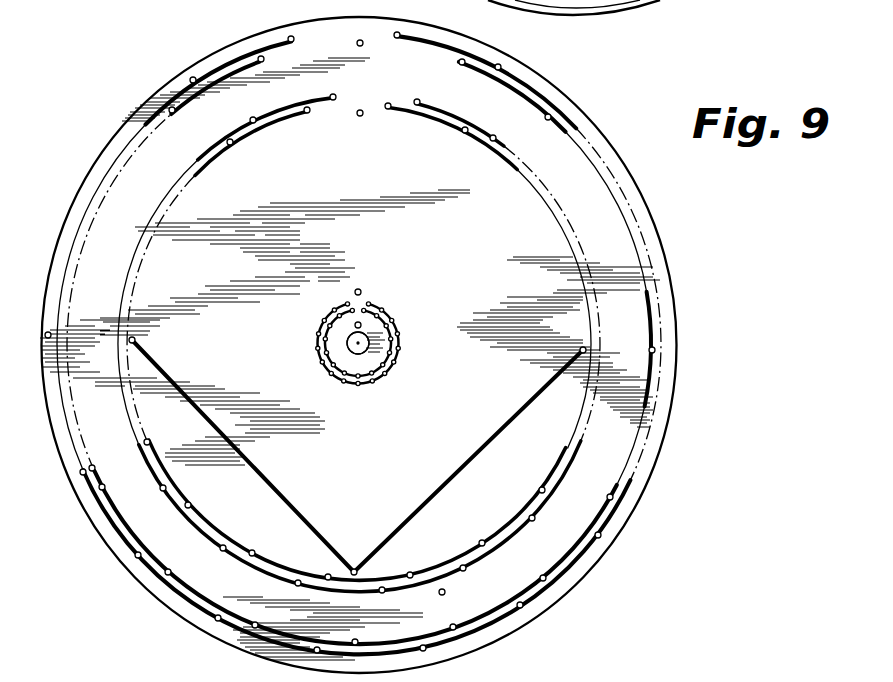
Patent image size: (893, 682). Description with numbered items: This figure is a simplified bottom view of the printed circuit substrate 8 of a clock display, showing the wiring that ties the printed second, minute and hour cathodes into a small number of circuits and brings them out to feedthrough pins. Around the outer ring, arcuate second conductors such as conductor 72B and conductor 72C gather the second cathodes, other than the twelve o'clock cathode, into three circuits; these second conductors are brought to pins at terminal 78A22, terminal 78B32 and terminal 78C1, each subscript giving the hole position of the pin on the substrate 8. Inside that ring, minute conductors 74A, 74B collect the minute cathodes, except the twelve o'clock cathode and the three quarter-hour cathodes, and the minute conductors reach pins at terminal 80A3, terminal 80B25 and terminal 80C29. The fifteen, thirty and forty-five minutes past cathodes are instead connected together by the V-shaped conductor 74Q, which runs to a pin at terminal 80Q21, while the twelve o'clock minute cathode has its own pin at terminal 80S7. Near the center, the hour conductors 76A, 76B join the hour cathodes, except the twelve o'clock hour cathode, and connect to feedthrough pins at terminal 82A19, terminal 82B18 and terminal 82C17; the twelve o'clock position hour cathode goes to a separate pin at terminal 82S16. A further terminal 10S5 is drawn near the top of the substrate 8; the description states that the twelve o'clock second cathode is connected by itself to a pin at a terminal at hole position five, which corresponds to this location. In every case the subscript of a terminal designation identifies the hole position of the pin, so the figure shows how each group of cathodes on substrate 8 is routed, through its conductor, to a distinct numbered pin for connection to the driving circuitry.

The printed circuit substrate 8 is at (678, 366).
The second conductor 72B is at (456, 48).
The second conductor 72C is at (557, 130).
The minute conductor 74A is at (433, 108).
The minute conductor 74B is at (504, 168).
The conductor 74Q is at (497, 440).
The terminal 80A3 is at (550, 114).
The terminal 80S7 is at (360, 116).
The pivot 10S5 is at (359, 40).
The terminal 80Q21 is at (134, 337).
The terminal 78A22 is at (48, 332).
The terminal 80B25 is at (144, 443).
The terminal 78C1 is at (655, 349).
The terminal 78B32 is at (523, 607).
The terminal 80C29 is at (444, 595).
The hour conductor 76A is at (370, 345).
The hour conductor 76B is at (358, 385).
The terminal 82A19 is at (316, 358).
The terminal 82B18 is at (394, 370).
The terminal 82S16 is at (358, 289).
The terminal 82C17 is at (362, 324).